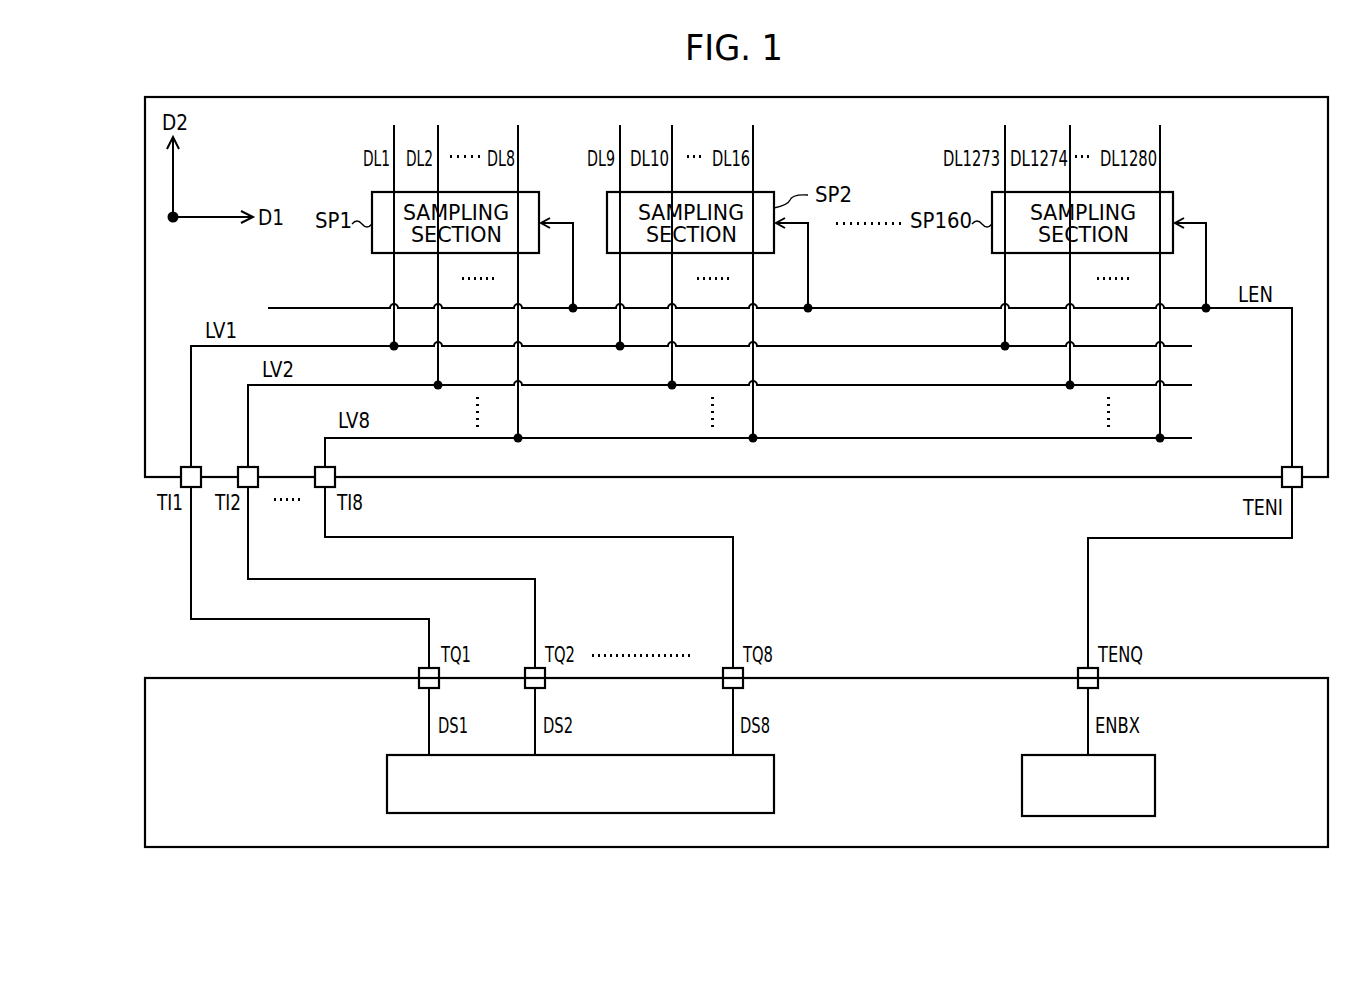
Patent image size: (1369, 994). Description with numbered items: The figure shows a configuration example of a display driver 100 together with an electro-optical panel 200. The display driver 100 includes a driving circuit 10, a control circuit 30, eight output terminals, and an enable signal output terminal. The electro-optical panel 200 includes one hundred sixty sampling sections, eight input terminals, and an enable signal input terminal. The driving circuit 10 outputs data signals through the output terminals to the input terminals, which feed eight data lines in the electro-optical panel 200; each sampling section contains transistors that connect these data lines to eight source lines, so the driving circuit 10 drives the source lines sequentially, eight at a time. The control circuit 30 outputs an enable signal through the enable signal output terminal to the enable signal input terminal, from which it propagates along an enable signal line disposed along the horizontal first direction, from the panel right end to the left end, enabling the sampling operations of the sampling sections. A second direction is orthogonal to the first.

The electro-optical panel 200 is at (1250, 97).
The display driver 100 is at (1247, 678).
The driving circuit 10 is at (774, 784).
The control circuit 30 is at (1155, 784).